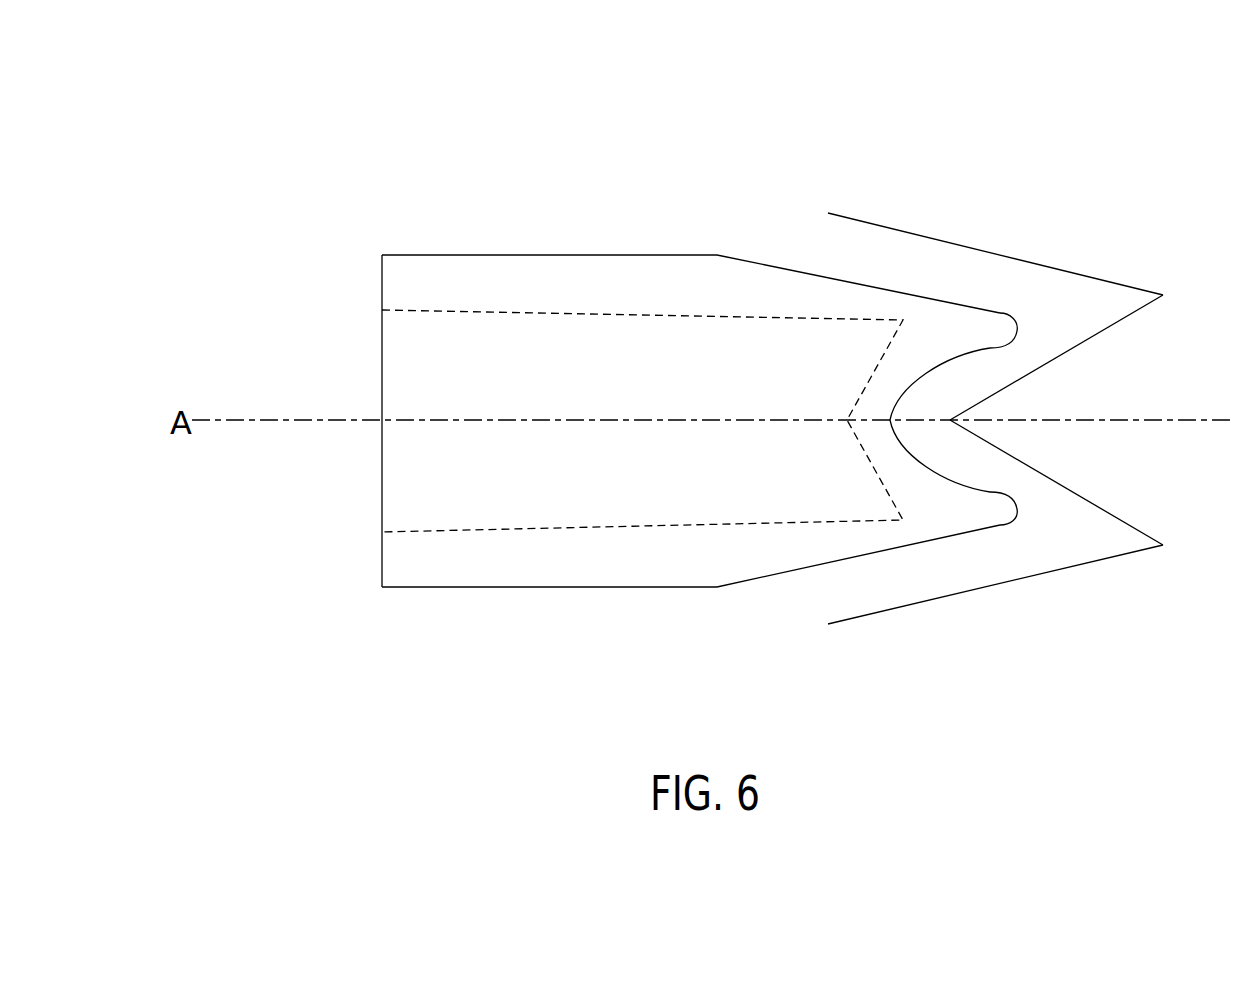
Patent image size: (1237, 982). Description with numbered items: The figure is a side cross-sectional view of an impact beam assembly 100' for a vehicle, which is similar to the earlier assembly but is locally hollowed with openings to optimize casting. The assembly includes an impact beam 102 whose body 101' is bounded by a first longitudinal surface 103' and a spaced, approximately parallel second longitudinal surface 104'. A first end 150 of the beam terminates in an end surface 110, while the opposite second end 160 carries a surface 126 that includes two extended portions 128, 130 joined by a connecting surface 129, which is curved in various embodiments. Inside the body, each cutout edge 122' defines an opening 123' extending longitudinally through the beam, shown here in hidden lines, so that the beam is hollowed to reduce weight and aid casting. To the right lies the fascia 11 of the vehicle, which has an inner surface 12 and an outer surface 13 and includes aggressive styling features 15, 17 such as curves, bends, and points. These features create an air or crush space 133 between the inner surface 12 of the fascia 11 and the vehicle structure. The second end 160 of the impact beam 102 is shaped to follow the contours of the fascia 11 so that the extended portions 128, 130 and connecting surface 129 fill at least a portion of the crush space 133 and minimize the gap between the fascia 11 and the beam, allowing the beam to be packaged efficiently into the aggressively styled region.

The impact beam assembly 100' is at (257, 101).
The impact beam 102 is at (484, 210).
The upper surface of ferrule 103' is at (549, 217).
The lower surface of ferrule 104' is at (548, 624).
The end surface 110 is at (381, 350).
The body 101' is at (356, 278).
The surface 126 is at (755, 262).
The opening 123' is at (858, 571).
The cutout edge 122' is at (642, 378).
The extended portion 128 is at (985, 310).
The extended portion 130 is at (1010, 498).
The connecting surface 129 is at (897, 437).
The first end 150 is at (277, 299).
The second end 160 is at (899, 281).
The crush space 133 is at (1043, 319).
The fascia 11 is at (1165, 294).
The feature 15 is at (1125, 320).
The outer surface 13 is at (1067, 359).
The inner surface 12 is at (1093, 498).
The feature 17 is at (1148, 548).